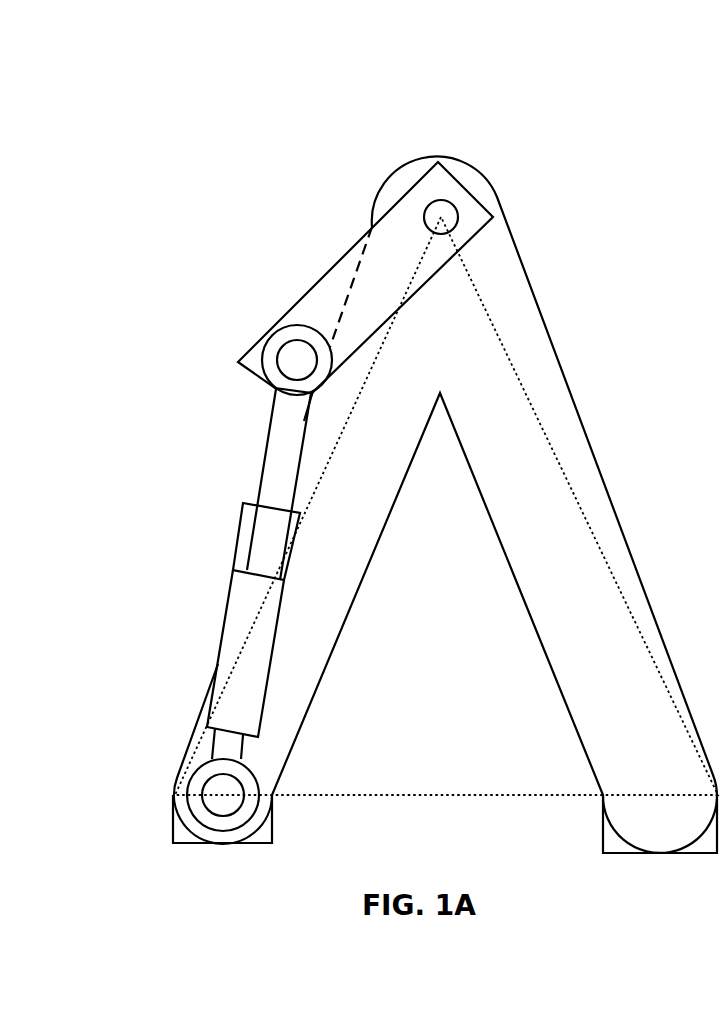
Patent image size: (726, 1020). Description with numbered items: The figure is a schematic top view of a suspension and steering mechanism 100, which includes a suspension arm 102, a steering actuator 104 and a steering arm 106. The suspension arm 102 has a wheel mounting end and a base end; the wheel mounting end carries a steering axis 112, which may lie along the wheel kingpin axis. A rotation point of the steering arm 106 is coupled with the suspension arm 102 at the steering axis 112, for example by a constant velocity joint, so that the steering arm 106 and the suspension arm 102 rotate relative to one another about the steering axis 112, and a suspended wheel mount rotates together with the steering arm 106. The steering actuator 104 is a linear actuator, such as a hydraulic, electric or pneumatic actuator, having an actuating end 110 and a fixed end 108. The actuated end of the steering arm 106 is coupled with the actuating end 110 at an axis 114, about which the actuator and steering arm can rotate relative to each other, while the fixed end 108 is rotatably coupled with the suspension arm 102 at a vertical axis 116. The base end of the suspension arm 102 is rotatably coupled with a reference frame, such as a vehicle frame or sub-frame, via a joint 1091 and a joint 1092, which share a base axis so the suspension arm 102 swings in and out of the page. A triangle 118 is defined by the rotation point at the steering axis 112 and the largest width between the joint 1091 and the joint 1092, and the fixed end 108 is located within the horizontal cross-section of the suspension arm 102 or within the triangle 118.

The suspension and steering mechanism 100 is at (351, 158).
The suspension arm 102 is at (580, 410).
The steering actuator 104 is at (238, 535).
The steering arm 106 is at (301, 298).
The fixed end 108 is at (171, 779).
The joint 1091 is at (250, 843).
The joint 1092 is at (690, 853).
The actuating end 110 is at (235, 354).
The steering axis 112 is at (458, 216).
The axis 114 is at (297, 360).
The vertical axis 116 is at (223, 795).
The triangle 118 is at (587, 520).